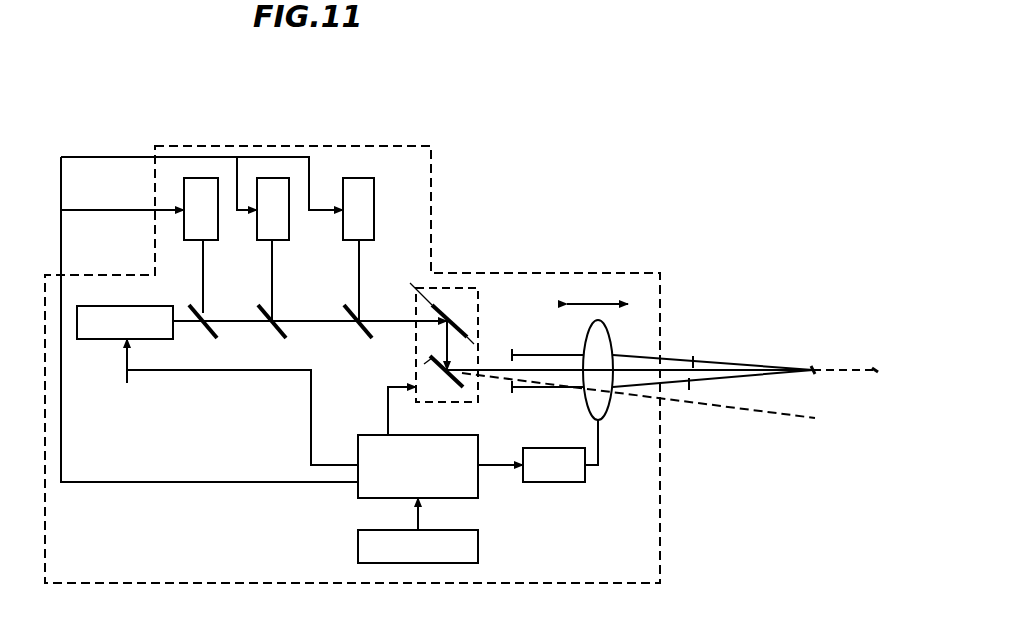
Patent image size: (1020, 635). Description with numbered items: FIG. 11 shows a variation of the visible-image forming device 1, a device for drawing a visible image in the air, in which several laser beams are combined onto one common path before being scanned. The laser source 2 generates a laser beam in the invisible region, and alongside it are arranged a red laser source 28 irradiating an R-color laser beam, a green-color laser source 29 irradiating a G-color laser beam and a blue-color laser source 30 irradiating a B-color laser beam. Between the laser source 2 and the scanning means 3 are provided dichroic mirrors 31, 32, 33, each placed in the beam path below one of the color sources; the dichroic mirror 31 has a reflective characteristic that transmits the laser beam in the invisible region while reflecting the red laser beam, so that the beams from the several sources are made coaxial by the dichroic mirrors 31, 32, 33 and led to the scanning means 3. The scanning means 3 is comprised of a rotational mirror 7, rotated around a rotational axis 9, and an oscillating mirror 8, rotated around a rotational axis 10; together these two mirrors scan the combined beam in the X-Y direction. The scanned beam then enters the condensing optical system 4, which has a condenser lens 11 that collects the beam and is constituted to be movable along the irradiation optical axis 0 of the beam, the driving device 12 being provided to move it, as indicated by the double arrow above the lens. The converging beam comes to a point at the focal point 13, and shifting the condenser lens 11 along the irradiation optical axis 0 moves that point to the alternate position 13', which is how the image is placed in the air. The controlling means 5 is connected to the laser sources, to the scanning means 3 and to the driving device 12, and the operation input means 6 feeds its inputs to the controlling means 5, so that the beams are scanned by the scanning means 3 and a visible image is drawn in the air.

The visible-image forming device 1 is at (397, 146).
The laser source 2 is at (95, 340).
The scanning means 3 is at (456, 289).
The condensing optical system 4 is at (637, 336).
The controlling means 5 is at (366, 496).
The operation input means 6 is at (478, 552).
The rotational mirror 7 is at (458, 322).
The oscillating mirror 8 is at (455, 388).
The rotational axis 9 is at (468, 338).
The rotational axis 10 is at (428, 366).
The condenser lens 11 is at (606, 408).
The driving device 12 is at (556, 483).
The focal point 13 is at (826, 350).
The shifted focal point 13' is at (856, 349).
The red laser source 28 is at (218, 235).
The green-color laser source 29 is at (289, 235).
The blue-color laser source 30 is at (374, 224).
The dichroic mirror 31 is at (200, 338).
The dichroic mirror 32 is at (268, 338).
The dichroic mirror 33 is at (358, 340).
The irradiation optical axis 0 is at (534, 356).